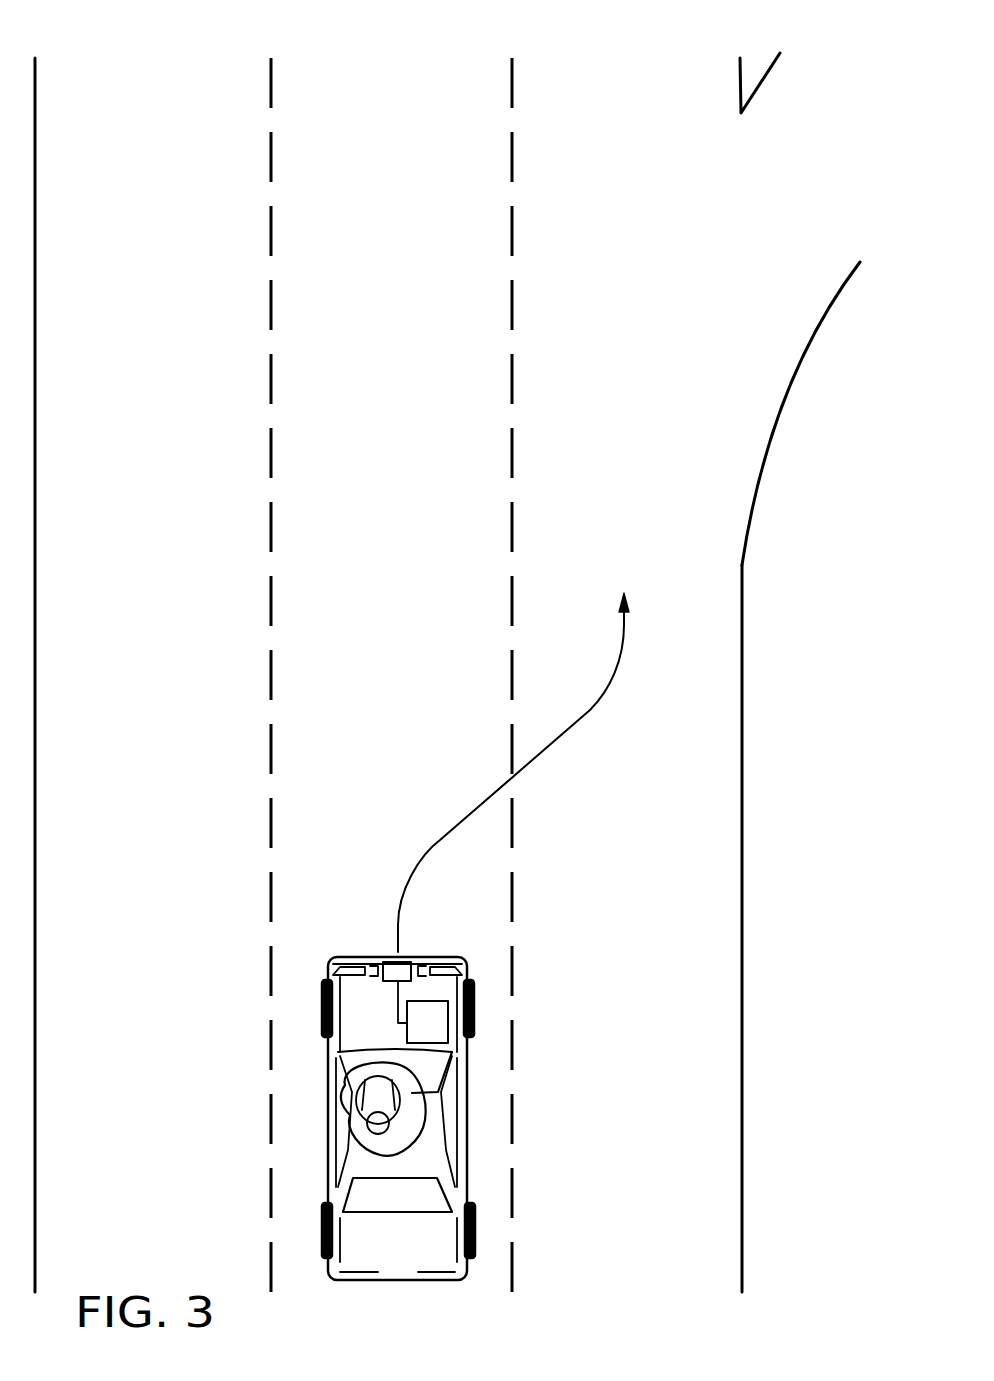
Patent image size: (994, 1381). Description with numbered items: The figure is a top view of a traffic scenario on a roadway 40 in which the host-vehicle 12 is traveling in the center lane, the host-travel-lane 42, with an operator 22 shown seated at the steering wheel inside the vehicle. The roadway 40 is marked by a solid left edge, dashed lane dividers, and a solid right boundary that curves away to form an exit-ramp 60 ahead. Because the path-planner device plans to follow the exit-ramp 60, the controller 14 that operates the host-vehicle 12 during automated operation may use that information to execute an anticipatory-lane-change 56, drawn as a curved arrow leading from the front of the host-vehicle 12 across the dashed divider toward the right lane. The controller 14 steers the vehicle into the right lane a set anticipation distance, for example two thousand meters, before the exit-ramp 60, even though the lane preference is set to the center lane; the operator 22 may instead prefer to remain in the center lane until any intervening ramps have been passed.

The host-vehicle 12 is at (468, 1140).
The controller 14 is at (673, 832).
The operator 22 is at (360, 1122).
The roadway 40 is at (742, 643).
The host-travel-lane 42 is at (654, 76).
The anticipatory-lane-change 56 is at (593, 710).
The exit-ramp 60 is at (780, 307).